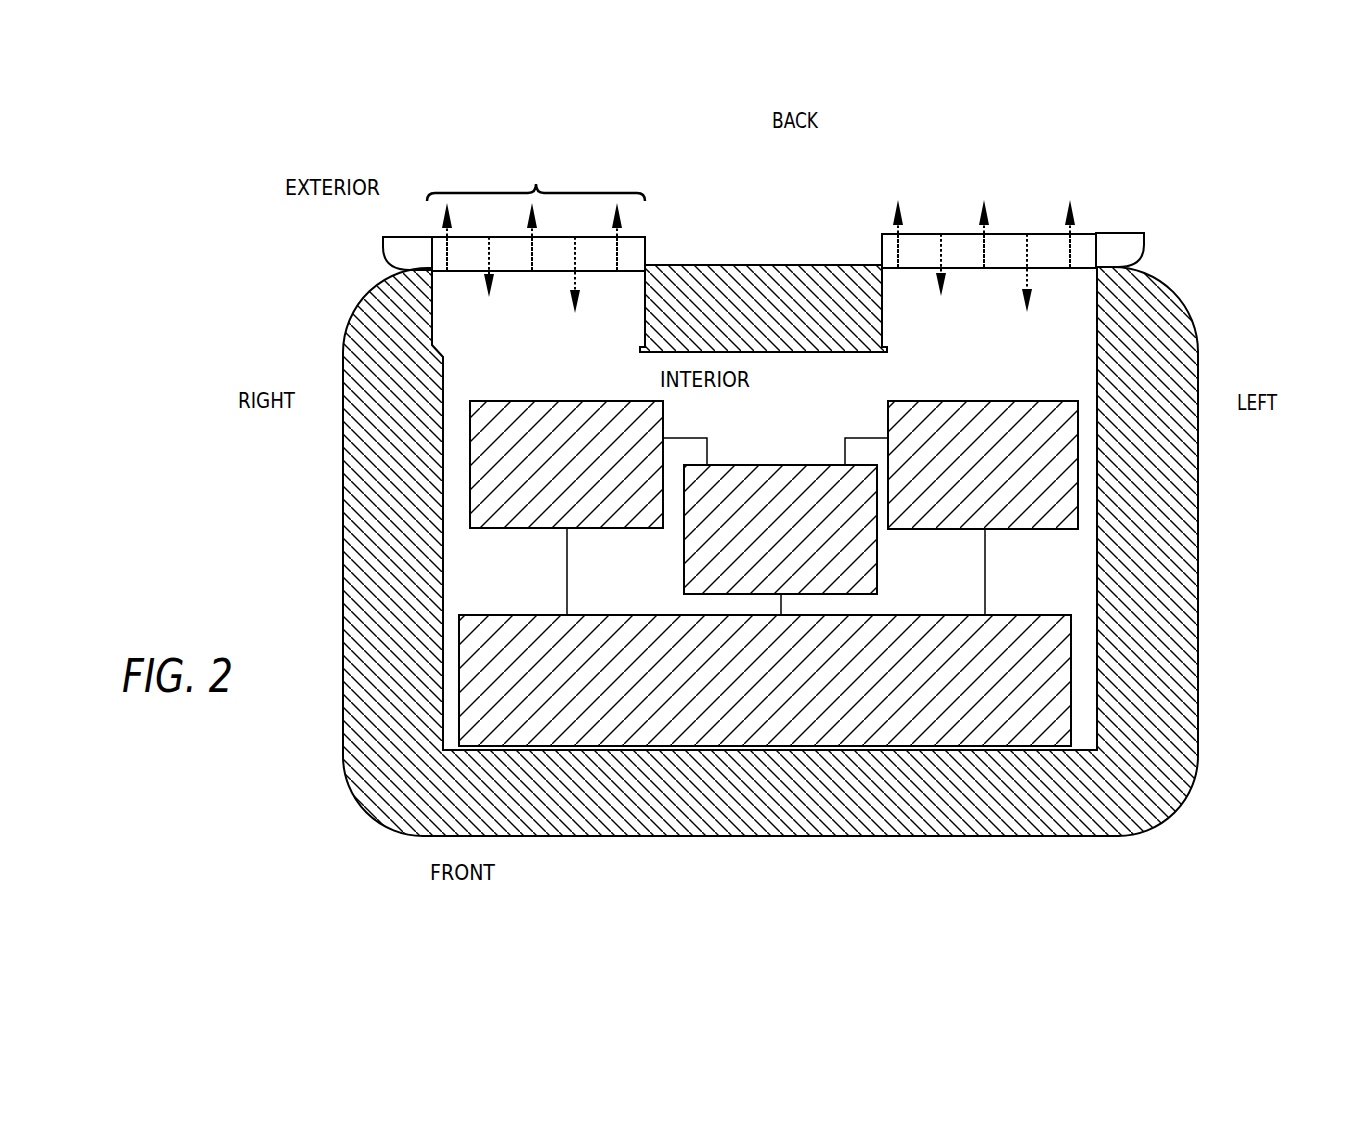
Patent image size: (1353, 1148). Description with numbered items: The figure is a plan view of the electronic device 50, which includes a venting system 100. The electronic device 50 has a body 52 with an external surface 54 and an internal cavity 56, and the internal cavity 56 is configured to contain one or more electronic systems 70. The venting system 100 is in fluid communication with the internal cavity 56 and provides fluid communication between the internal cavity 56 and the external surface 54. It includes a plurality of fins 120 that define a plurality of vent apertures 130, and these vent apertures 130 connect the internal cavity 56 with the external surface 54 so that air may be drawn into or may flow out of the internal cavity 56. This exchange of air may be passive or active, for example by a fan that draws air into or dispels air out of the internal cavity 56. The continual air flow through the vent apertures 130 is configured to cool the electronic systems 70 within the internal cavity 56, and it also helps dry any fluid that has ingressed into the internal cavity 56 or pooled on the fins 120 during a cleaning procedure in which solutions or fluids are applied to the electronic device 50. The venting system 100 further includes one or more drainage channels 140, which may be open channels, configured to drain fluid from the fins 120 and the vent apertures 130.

The electronic device 50 is at (776, 838).
The body 52 is at (1085, 837).
The external surface 54 is at (293, 235).
The internal cavity 56 is at (1069, 565).
The electronic systems 70 is at (470, 464).
The venting system 100 is at (947, 168).
The fins 120 is at (536, 211).
The vent apertures 130 is at (498, 153).
The drainage channels 140 is at (405, 250).